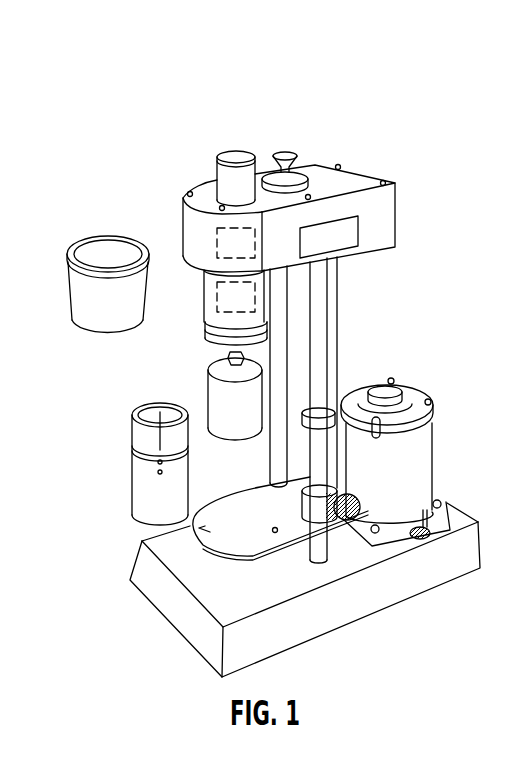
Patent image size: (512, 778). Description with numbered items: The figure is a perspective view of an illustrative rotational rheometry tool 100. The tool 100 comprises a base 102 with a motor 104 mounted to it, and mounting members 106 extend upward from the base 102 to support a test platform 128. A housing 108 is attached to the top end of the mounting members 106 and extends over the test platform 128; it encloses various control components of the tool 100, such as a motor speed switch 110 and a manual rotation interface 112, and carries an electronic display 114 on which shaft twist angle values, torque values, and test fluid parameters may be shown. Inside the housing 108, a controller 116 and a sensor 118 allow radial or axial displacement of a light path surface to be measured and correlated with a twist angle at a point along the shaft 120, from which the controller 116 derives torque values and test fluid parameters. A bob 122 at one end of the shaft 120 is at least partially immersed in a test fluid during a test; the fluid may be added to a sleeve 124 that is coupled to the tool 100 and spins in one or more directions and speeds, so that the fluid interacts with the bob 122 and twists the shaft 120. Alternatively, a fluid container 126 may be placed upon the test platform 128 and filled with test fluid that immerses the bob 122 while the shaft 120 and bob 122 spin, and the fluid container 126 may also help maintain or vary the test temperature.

The rotational rheometry tool 100 is at (353, 98).
The base 102 is at (167, 611).
The motor 104 is at (386, 390).
The mounting members 106 is at (326, 280).
The housing 108 is at (398, 216).
The motor speed switch 110 is at (301, 146).
The manual rotation interface 112 is at (228, 154).
The electronic display 114 is at (362, 231).
The controller 116 is at (217, 245).
The sensor 118 is at (217, 298).
The shaft 120 is at (228, 357).
The bob 122 is at (200, 392).
The sleeve 124 is at (136, 484).
The fluid container 126 is at (103, 343).
The test platform 128 is at (236, 506).